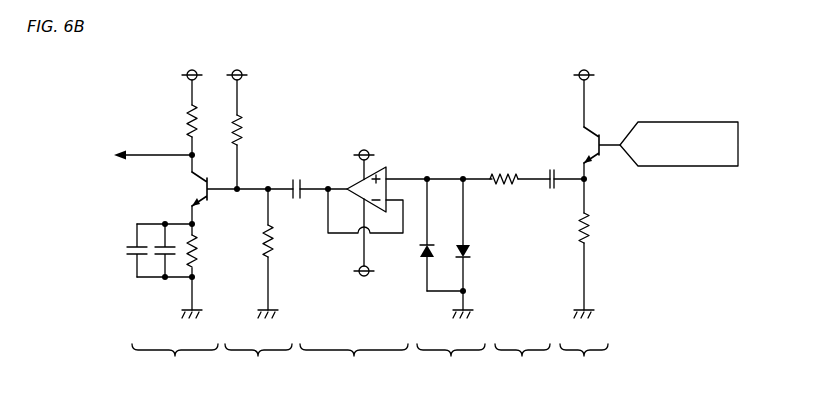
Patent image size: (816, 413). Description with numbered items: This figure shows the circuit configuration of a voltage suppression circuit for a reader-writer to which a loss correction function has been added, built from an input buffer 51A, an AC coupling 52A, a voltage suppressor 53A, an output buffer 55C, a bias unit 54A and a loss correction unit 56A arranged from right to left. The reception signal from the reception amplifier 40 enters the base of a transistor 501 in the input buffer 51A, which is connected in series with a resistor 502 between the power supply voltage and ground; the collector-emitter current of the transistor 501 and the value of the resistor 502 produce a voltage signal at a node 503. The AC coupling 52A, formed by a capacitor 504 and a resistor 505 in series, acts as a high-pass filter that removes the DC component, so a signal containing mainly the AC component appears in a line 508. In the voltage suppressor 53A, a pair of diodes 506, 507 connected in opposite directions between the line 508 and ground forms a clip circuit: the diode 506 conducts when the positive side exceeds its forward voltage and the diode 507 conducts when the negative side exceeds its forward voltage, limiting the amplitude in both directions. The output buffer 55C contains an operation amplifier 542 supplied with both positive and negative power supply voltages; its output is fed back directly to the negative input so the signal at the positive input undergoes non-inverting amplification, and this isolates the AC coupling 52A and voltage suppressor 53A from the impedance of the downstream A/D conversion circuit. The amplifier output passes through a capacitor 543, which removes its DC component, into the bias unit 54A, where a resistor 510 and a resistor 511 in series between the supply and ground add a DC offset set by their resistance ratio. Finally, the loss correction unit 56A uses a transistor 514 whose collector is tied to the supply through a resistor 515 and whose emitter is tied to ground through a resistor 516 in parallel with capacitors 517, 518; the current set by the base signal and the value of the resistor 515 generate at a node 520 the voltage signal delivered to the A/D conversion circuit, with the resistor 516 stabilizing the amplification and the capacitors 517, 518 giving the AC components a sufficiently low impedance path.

The reception amplifier 40 is at (703, 122).
The transistor 501 is at (600, 137).
The resistor 502 is at (592, 232).
The node 503 is at (590, 179).
The capacitor 504 is at (552, 168).
The resistor 505 is at (503, 174).
The diode 506 is at (472, 252).
The diode 507 is at (420, 250).
The line 508 is at (440, 177).
The resistor 510 is at (248, 128).
The resistor 511 is at (275, 243).
The transistor 514 is at (208, 178).
The resistor 515 is at (185, 119).
The resistor 516 is at (200, 251).
The capacitor 517 is at (162, 239).
The capacitor 518 is at (127, 247).
The node 520 is at (190, 153).
The operation amplifier 542 is at (356, 179).
The capacitor 543 is at (296, 177).
The input buffer 51A is at (584, 362).
The AC coupling 52A is at (522, 362).
The voltage suppressor 53A is at (451, 362).
The output buffer 55C is at (354, 362).
The bias unit 54A is at (258, 362).
The loss correction unit 56A is at (175, 362).